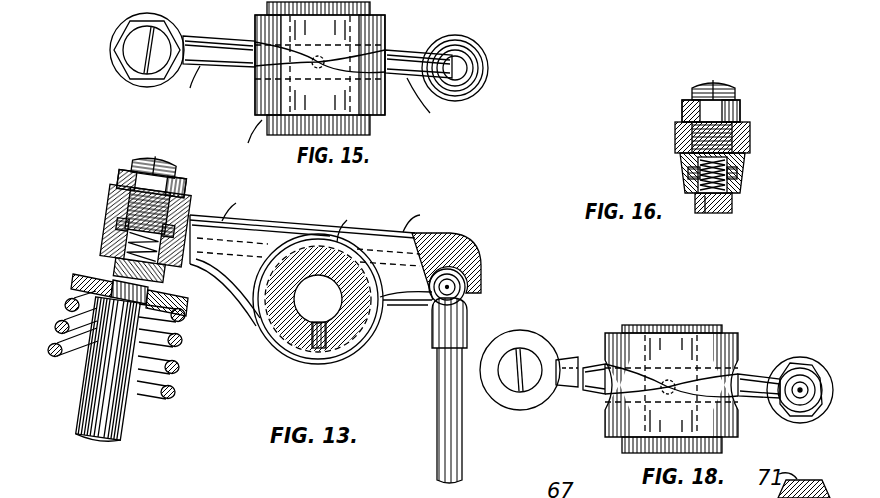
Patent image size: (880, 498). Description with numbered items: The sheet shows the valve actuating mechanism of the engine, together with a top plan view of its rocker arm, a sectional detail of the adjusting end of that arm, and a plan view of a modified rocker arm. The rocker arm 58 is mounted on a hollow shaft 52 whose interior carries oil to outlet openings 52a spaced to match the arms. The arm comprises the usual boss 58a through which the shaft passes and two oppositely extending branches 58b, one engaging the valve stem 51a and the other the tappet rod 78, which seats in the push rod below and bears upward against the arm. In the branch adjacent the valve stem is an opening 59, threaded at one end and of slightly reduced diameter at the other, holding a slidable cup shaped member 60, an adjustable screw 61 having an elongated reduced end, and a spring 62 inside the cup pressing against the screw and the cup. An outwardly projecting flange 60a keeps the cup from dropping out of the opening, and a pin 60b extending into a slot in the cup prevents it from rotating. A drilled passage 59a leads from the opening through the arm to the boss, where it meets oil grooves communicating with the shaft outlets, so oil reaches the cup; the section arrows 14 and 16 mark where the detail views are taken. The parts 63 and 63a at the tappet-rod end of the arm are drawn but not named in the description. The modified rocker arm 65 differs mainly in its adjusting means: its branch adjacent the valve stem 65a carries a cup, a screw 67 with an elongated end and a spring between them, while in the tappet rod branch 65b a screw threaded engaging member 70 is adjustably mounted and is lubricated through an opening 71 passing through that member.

In FIG. 13, the section line for FIG. 14 is at (483, 488).
In FIG. 13, the section line for FIG. 16 is at (170, 213).
In FIG. 13, the valve stem 51a is at (114, 424).
In FIG. 15, the shaft 52 is at (370, 125).
In FIG. 13, the shaft 52 is at (282, 347).
In FIG. 18, the shaft 52 is at (723, 331).
In FIG. 15, the outlet opening 52a is at (325, 56).
In FIG. 13, the outlet opening 52a is at (320, 350).
In FIG. 18, the outlet opening 52a is at (664, 392).
In FIG. 15, the rocker arm 58 is at (254, 98).
In FIG. 16, the rocker arm 58 is at (750, 140).
In FIG. 13, the rocker arm 58 is at (258, 234).
In FIG. 15, the boss 58a is at (243, 142).
In FIG. 13, the boss 58a is at (359, 219).
In FIG. 15, the branch 58b is at (320, 102).
In FIG. 13, the branch 58b is at (334, 206).
In FIG. 16, the opening 59 is at (677, 137).
In FIG. 13, the opening 59 is at (106, 214).
In FIG. 13, the drilled passage 59a is at (291, 229).
In FIG. 16, the cup shaped member 60 is at (732, 203).
In FIG. 13, the cup shaped member 60 is at (122, 272).
In FIG. 16, the outwardly projecting flange 60a is at (740, 165).
In FIG. 13, the outwardly projecting flange 60a is at (183, 245).
In FIG. 16, the pin 60b is at (688, 172).
In FIG. 13, the pin 60b is at (116, 236).
In FIG. 15, the adjustable screw 61 is at (140, 43).
In FIG. 16, the adjustable screw 61 is at (716, 83).
In FIG. 13, the adjustable screw 61 is at (118, 182).
In FIG. 16, the spring 62 is at (705, 213).
In FIG. 13, the spring 62 is at (216, 272).
In FIG. 15, the ball socket 63 is at (470, 52).
In FIG. 13, the ball socket 63 is at (470, 260).
In FIG. 13, the ball seat boss 63a is at (441, 234).
In FIG. 18, the modified form of rocker arm 65 is at (600, 348).
In FIG. 18, the branch adjacent the valve stem 65a is at (530, 402).
In FIG. 18, the tappet rod branch 65b is at (752, 400).
In FIG. 18, the screw 67 is at (508, 352).
In FIG. 18, the screw threaded engaging member 70 is at (795, 363).
In FIG. 18, the opening 71 is at (798, 392).
In FIG. 13, the tappet rod 78 is at (437, 432).